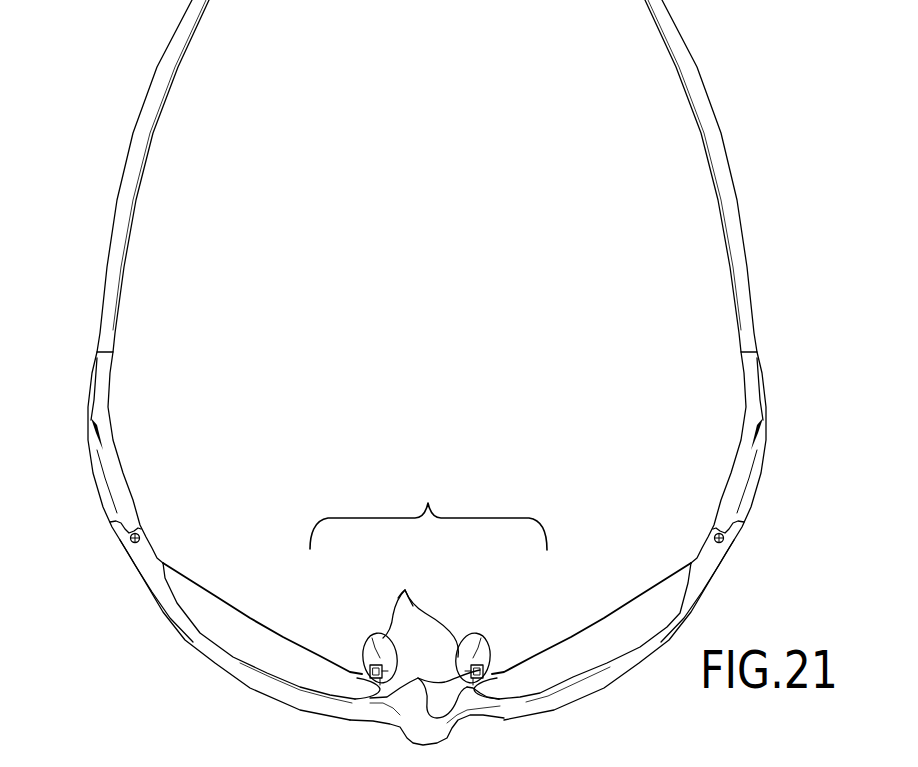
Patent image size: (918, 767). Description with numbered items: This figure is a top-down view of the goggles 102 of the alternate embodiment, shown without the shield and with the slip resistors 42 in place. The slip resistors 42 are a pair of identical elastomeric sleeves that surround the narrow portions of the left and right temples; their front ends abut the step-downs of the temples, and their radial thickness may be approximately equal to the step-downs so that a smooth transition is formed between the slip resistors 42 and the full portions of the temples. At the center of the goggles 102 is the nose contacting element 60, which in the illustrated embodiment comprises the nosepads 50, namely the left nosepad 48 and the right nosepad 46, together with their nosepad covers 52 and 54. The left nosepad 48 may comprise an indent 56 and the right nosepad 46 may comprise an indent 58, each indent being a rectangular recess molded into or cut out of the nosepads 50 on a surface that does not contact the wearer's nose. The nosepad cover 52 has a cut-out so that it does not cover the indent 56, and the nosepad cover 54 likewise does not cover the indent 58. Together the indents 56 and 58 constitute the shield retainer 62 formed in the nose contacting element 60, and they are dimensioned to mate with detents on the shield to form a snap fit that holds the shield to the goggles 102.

The slip resistors 42 is at (113, 197).
The right nosepad 46 is at (491, 639).
The left nosepad 48 is at (363, 639).
The nosepads 50 is at (406, 589).
The nosepad cover 52 is at (372, 636).
The nosepad cover 54 is at (482, 636).
The indent 56 is at (363, 670).
The indent 58 is at (495, 670).
The nose contacting element 60 is at (428, 510).
The shield retainer 62 is at (418, 685).
The goggles 102 is at (121, 616).